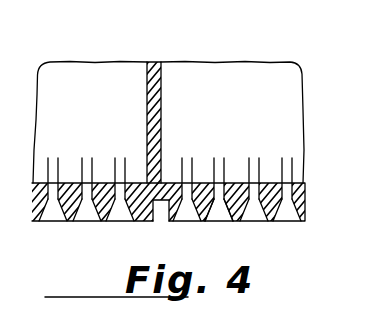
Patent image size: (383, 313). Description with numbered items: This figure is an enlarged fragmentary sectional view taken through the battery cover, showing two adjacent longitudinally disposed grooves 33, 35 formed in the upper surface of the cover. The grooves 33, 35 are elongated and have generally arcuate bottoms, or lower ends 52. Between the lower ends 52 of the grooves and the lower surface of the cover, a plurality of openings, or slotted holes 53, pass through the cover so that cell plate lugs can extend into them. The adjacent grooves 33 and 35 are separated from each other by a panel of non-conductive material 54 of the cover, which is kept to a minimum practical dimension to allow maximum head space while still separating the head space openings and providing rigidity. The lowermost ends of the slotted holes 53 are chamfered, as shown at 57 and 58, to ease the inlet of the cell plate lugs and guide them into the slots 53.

The longitudinally disposed groove 33 is at (105, 77).
The longitudinally disposed groove 35 is at (193, 83).
The non-conductive material 54 is at (155, 61).
The lower end 52 is at (201, 178).
The slotted hole 53 is at (253, 188).
The chamfer 57 is at (214, 216).
The chamfer 58 is at (225, 218).